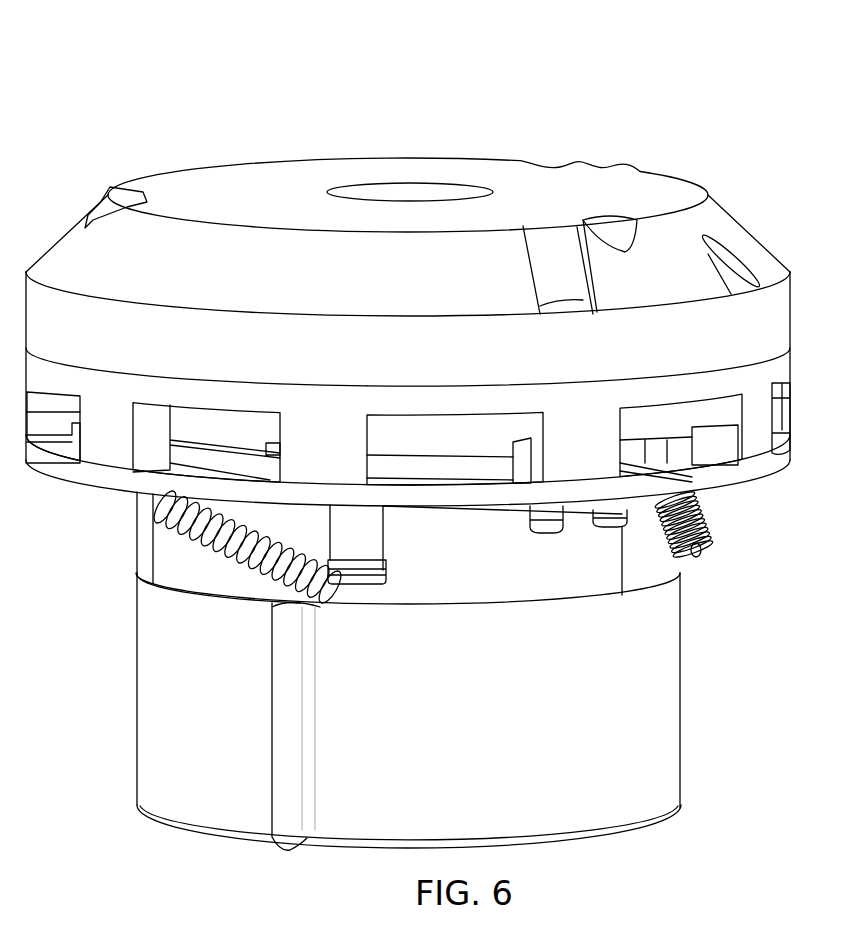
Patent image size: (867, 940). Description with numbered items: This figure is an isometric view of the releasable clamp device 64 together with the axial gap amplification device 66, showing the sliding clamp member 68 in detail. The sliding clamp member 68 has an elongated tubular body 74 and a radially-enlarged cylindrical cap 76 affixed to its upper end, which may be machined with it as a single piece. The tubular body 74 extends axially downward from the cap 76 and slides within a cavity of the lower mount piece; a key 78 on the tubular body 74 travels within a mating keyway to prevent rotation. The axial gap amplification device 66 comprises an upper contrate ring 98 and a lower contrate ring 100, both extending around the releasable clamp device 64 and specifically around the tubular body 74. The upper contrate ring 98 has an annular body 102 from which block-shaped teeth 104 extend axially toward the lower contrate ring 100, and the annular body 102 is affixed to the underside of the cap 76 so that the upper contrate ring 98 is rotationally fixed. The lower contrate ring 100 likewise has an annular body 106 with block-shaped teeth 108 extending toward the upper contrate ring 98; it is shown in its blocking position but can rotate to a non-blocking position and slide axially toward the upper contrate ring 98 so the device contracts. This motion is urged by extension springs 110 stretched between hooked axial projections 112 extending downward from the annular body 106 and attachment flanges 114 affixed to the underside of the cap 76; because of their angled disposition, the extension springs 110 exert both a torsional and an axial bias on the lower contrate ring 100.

The releasable clamp device 64 is at (157, 96).
The axial gap amplification device 66 is at (787, 352).
The sliding clamp member 68 is at (615, 175).
The tubular body 74 is at (680, 700).
The cylindrical cap 76 is at (290, 164).
The key 78 is at (272, 748).
The upper contrate ring 98 is at (226, 392).
The lower contrate ring 100 is at (457, 511).
The annular body 102 is at (447, 397).
The block-shaped teeth 104 is at (43, 396).
The annular body 106 is at (422, 507).
The block-shaped teeth 108 is at (40, 432).
The extension springs 110 is at (207, 537).
The hooked axial projections 112 is at (380, 580).
The attachment flanges 114 is at (113, 503).